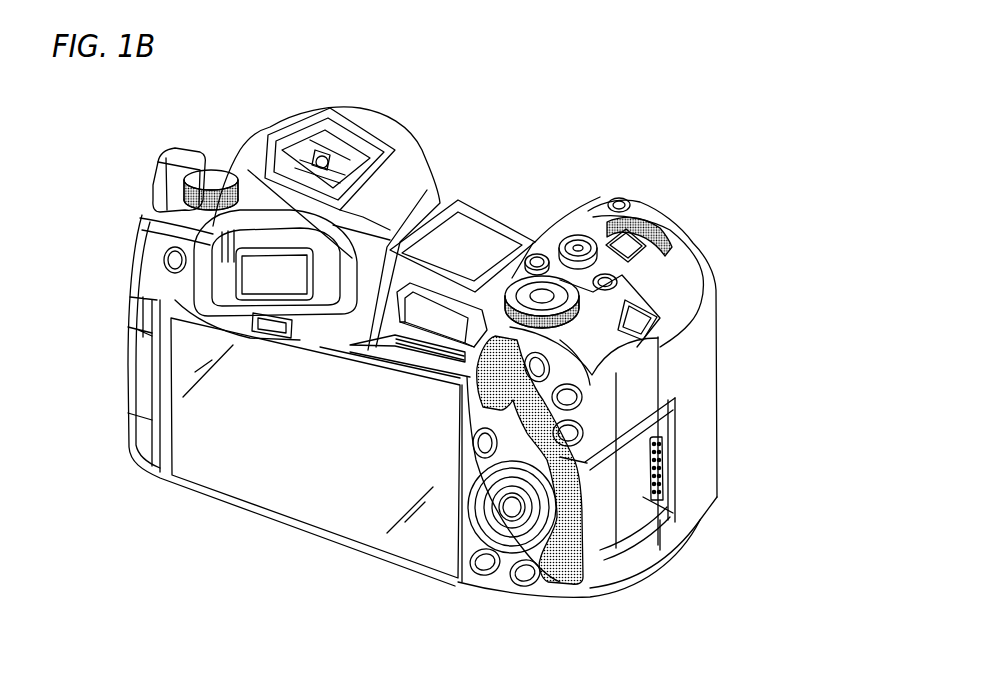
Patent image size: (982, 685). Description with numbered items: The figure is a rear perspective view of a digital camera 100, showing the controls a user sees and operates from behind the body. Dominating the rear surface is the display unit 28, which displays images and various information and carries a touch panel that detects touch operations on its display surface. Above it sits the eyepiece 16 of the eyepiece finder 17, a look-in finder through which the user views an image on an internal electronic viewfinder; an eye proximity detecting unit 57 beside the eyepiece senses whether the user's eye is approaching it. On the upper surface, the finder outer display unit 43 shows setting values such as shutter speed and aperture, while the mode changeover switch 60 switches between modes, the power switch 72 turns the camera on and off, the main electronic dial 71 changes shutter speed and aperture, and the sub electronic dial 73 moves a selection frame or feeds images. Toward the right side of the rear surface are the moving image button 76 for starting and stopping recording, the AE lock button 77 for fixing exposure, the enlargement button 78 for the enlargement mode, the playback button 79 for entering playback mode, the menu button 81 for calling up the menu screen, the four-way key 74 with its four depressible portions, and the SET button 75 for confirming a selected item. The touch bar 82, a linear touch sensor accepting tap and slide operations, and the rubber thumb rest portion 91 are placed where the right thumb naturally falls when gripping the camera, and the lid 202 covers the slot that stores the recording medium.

The digital camera 100 is at (666, 143).
The eyepiece 16 is at (260, 265).
The eyepiece finder 17 is at (432, 148).
The display unit 28 is at (278, 480).
The finder outer display unit 43 is at (481, 228).
The eye proximity detecting unit 57 is at (252, 328).
The mode changeover switch 60 is at (540, 294).
The main electronic dial 71 is at (620, 200).
The power switch 72 is at (208, 178).
The sub electronic dial 73 is at (592, 290).
The four-way key 74 is at (558, 585).
The SET button 75 is at (503, 512).
The moving image button 76 is at (575, 238).
The AE lock button 77 is at (583, 392).
The enlargement button 78 is at (584, 430).
The playback button 79 is at (490, 578).
The menu button 81 is at (162, 257).
The touch bar 82 is at (440, 312).
The thumb rest portion 91 is at (548, 336).
The lid 202 is at (655, 505).